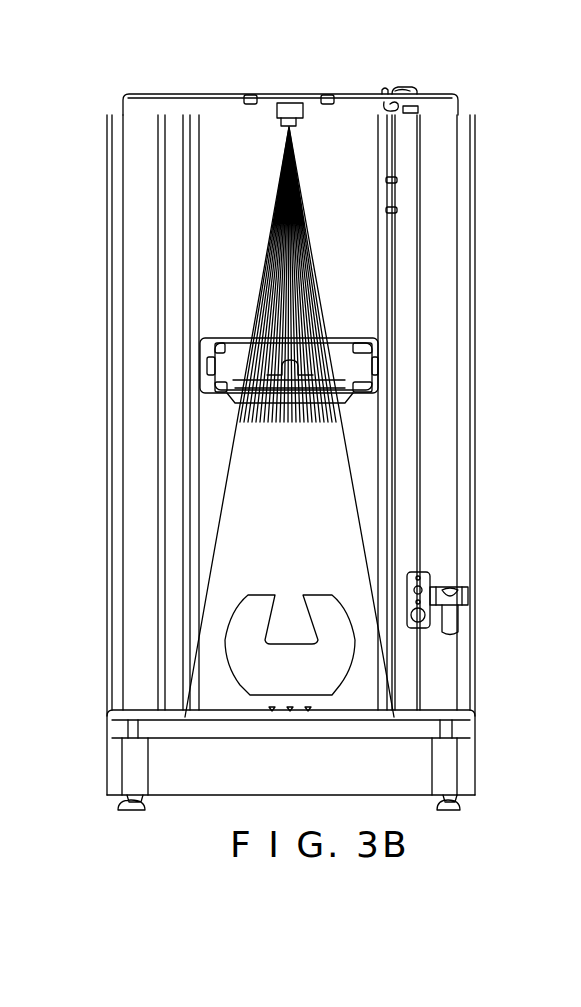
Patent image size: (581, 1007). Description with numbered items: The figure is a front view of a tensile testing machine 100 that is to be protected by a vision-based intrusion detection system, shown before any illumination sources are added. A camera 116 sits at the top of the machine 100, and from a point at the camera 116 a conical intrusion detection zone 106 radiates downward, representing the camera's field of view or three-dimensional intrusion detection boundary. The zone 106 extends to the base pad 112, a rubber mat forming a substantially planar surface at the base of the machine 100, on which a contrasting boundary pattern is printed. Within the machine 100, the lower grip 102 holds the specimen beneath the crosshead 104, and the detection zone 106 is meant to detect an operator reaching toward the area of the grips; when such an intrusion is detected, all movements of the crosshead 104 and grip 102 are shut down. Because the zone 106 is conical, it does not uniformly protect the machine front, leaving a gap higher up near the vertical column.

The tensile testing machine 100 is at (333, 424).
The lower grip 102 is at (308, 675).
The crosshead 104 is at (220, 338).
The conical intrusion detection zone 106 is at (218, 543).
The base pad 112 is at (457, 713).
The camera 116 is at (293, 110).